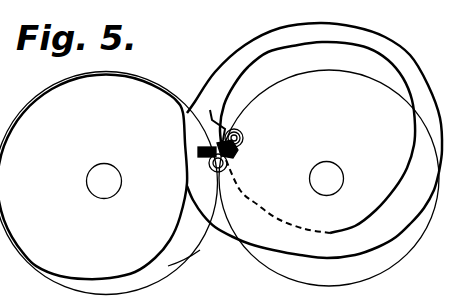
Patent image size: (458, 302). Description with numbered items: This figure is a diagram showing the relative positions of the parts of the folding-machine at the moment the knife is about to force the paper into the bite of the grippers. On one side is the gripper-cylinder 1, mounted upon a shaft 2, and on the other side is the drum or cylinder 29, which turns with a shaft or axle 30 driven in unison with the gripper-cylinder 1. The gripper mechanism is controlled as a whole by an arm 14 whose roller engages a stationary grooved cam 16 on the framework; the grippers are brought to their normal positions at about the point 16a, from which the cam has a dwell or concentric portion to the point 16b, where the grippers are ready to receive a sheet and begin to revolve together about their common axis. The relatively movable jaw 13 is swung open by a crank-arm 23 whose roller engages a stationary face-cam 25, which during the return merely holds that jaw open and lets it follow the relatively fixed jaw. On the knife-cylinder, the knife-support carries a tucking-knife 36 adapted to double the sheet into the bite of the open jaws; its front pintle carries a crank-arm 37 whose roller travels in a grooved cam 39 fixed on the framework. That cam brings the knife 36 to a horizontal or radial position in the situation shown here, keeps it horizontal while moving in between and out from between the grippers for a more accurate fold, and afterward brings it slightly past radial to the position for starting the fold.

The gripper-cylinder 1 is at (418, 244).
The shaft 2 is at (333, 172).
The jaw 13 is at (245, 158).
The arm 14 is at (199, 141).
The grooved cam 16 is at (368, 297).
The point on grooved cam 16a is at (333, 24).
The point on grooved cam 16b is at (199, 147).
The crank-arm 23 is at (231, 128).
The face-cam 25 is at (317, 137).
The drum or cylinder 29 is at (168, 266).
The shaft or axle 30 is at (87, 181).
The tucking-knife 36 is at (209, 173).
The crank-arm 37 is at (210, 110).
The grooved cam 39 is at (109, 183).